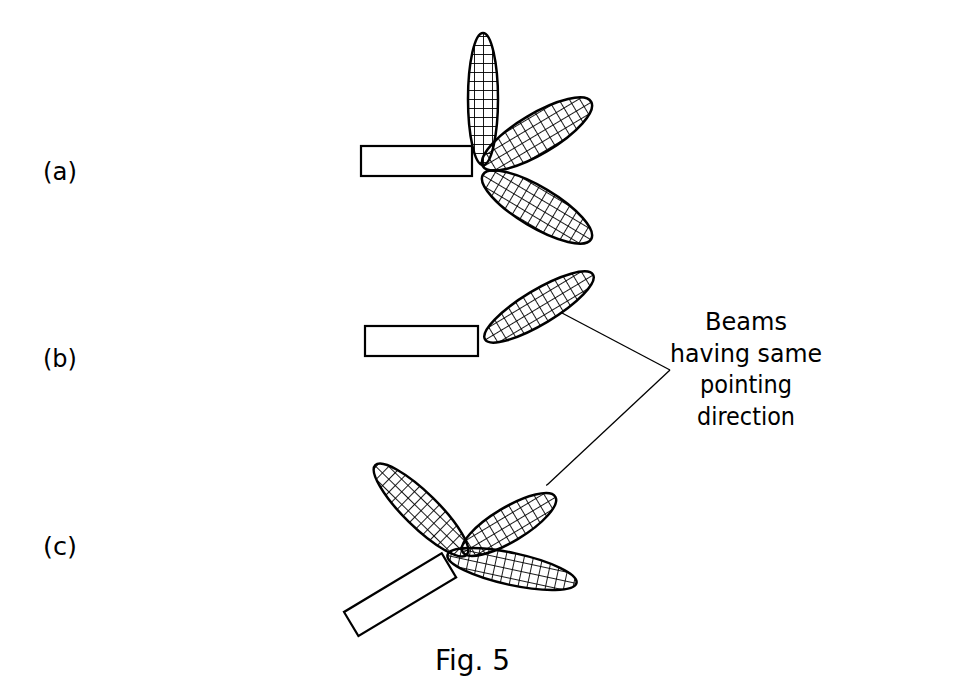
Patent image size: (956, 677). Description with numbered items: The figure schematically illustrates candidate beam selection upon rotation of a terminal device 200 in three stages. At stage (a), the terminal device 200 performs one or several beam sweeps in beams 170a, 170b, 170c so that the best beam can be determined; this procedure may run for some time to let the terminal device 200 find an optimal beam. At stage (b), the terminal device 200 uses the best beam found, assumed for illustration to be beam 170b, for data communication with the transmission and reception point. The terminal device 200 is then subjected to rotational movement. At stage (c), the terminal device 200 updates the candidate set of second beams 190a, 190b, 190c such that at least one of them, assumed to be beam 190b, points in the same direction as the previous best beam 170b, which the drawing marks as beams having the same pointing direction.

The first beam 170a is at (484, 34).
The first beam 170b is at (561, 127).
The first beam 170c is at (561, 218).
The second beam 190a is at (385, 466).
The second beam 190b is at (550, 497).
The second beam 190c is at (563, 582).
The terminal device 200 is at (398, 170).